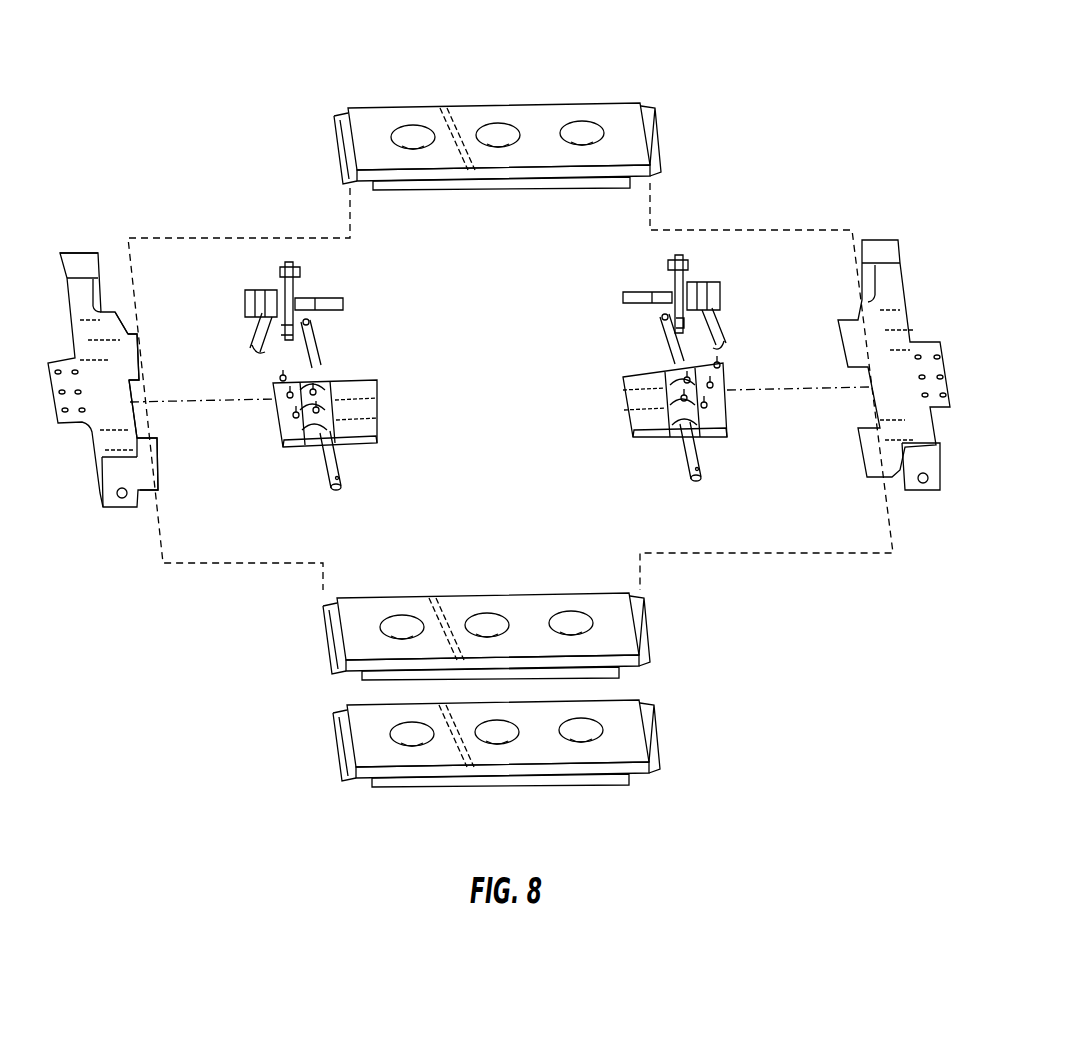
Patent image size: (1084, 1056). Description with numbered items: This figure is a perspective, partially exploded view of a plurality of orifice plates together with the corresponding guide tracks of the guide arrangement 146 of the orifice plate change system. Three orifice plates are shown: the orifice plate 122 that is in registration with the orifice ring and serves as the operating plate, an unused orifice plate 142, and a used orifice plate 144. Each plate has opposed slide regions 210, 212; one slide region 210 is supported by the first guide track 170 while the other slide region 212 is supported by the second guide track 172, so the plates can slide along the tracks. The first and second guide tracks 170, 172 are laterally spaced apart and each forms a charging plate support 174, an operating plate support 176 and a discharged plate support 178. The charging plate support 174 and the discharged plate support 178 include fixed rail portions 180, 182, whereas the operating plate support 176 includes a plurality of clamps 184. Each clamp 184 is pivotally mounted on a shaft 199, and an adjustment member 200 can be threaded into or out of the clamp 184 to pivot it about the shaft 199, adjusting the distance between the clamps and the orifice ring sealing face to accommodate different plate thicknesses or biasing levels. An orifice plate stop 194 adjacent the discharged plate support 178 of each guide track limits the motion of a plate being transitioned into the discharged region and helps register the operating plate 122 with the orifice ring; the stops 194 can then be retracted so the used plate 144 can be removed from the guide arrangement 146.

The orifice plate 122 is at (612, 603).
The unused orifice plate 142 is at (620, 752).
The used orifice plate 144 is at (540, 113).
The guide arrangement 146 is at (762, 172).
The first guide track 170 is at (111, 545).
The second guide track 172 is at (921, 518).
The charging plate support 174 is at (147, 447).
The operating plate support 176 is at (360, 402).
The discharged plate support 178 is at (139, 368).
The fixed rail portion 180 is at (150, 462).
The fixed rail portion 182 is at (135, 345).
The clamp 184 is at (303, 455).
The orifice plate stop 194 is at (305, 300).
The shaft 199 is at (333, 458).
The adjustment member 200 is at (280, 378).
The slide region 210 is at (333, 100).
The slide region 212 is at (658, 102).